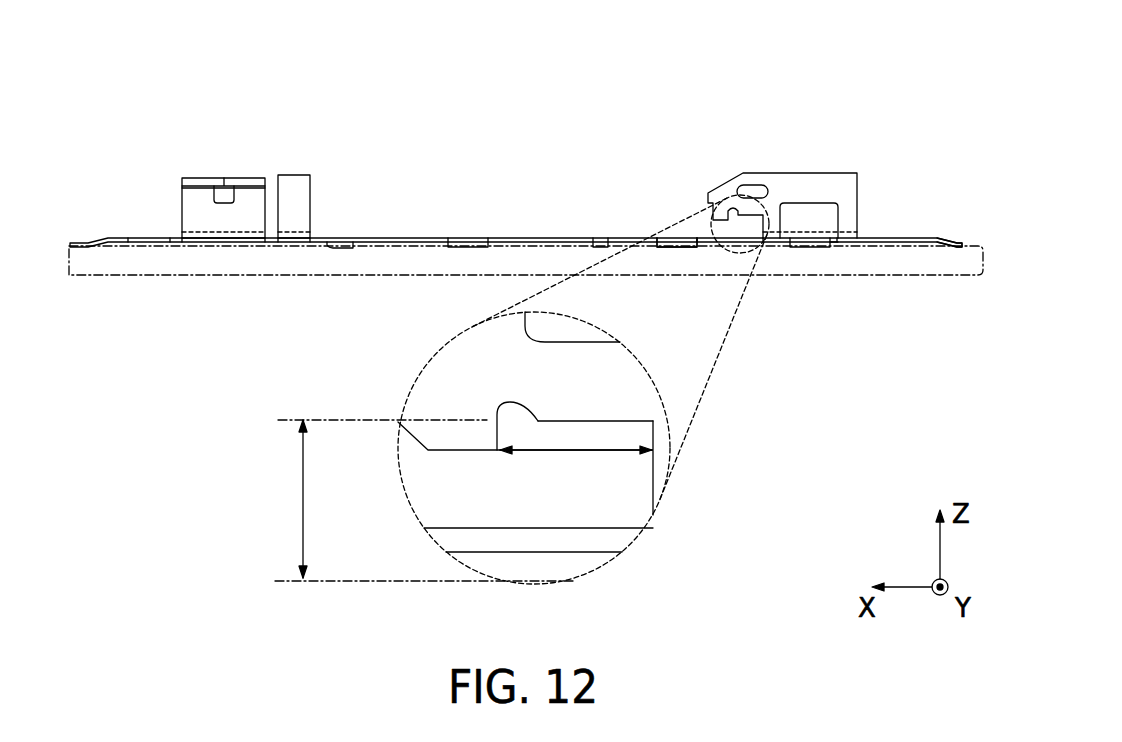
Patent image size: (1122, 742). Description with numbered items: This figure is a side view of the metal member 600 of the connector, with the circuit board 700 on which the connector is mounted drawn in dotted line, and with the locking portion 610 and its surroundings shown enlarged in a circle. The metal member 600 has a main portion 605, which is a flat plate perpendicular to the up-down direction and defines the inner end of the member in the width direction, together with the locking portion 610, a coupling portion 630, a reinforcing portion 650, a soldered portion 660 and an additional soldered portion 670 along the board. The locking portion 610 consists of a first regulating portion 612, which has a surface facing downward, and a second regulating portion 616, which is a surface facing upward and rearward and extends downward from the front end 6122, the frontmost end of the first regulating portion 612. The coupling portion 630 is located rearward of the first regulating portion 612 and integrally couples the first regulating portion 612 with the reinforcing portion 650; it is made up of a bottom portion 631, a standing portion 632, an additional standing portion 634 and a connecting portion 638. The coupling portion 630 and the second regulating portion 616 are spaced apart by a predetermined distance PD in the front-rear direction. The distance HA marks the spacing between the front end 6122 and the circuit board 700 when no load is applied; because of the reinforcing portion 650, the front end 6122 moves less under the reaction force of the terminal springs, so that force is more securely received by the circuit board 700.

The metal member 600 is at (330, 82).
The circuit board 700 is at (147, 283).
The soldered portion 660 is at (677, 249).
The coupling portion 630 is at (782, 173).
The connecting portion 638 is at (812, 188).
The additional standing portion 634 is at (847, 218).
The locking portion 610 is at (730, 200).
The reinforcing portion 650 is at (810, 247).
The bottom portion 631 is at (833, 247).
The additional soldered portion 670 is at (955, 250).
The second regulating portion 616 is at (497, 440).
The front end 6122 is at (490, 417).
The first regulating portion 612 is at (585, 421).
The standing portion 632 is at (660, 470).
The predetermined distance PD is at (577, 450).
The distance between front end and circuit board HA is at (303, 500).
The main portion 605 is at (518, 540).